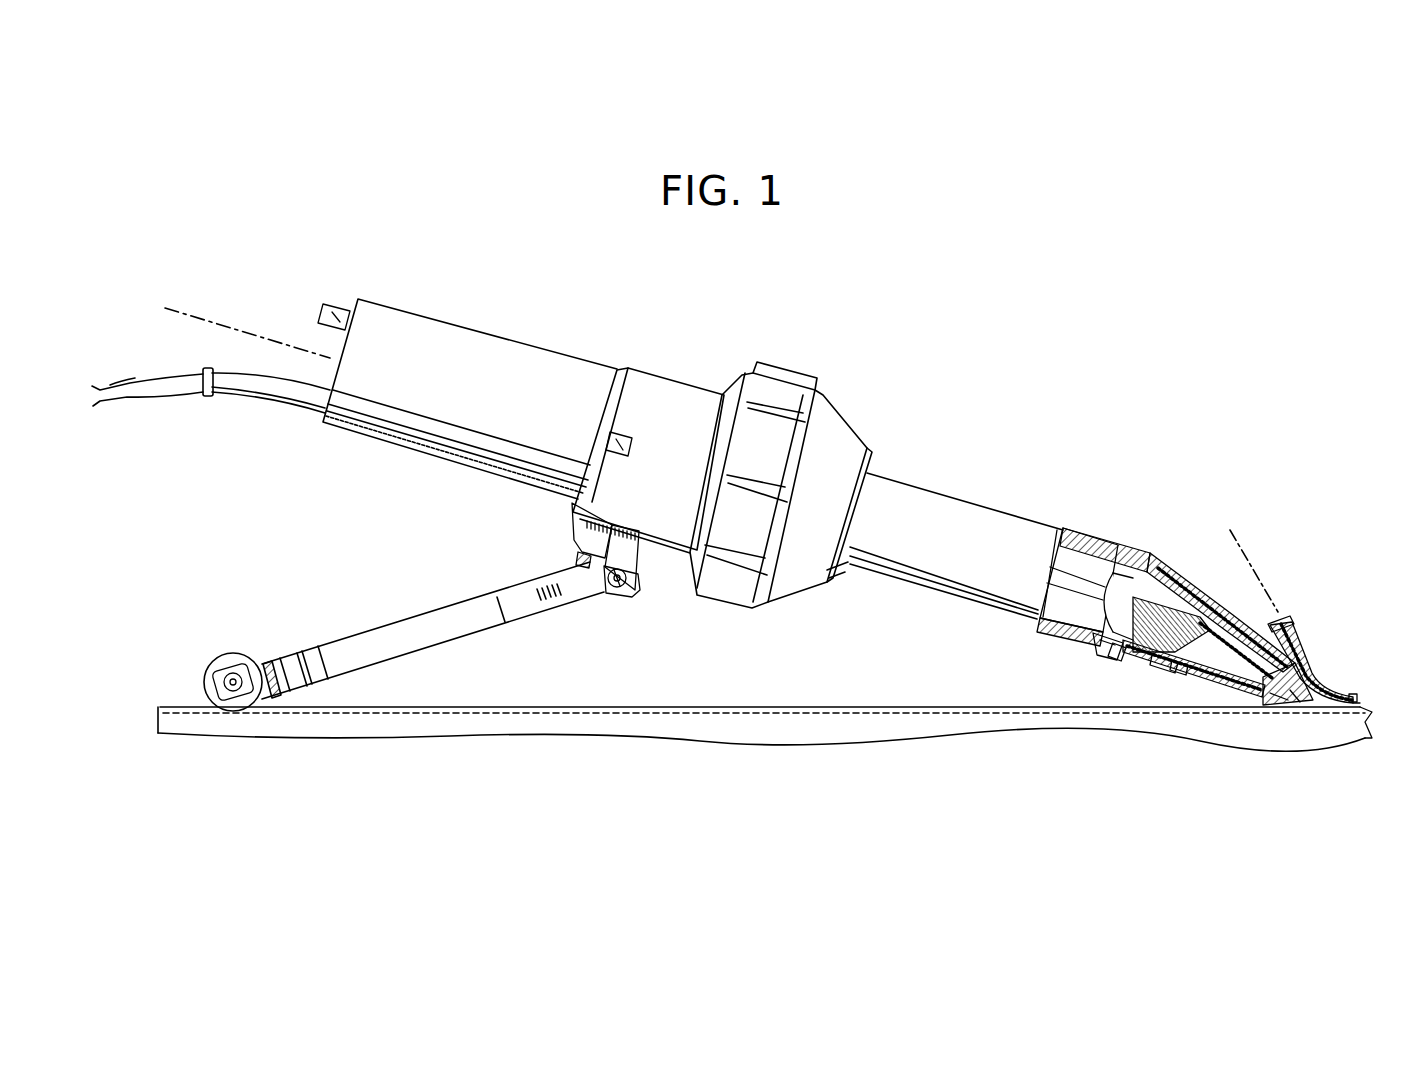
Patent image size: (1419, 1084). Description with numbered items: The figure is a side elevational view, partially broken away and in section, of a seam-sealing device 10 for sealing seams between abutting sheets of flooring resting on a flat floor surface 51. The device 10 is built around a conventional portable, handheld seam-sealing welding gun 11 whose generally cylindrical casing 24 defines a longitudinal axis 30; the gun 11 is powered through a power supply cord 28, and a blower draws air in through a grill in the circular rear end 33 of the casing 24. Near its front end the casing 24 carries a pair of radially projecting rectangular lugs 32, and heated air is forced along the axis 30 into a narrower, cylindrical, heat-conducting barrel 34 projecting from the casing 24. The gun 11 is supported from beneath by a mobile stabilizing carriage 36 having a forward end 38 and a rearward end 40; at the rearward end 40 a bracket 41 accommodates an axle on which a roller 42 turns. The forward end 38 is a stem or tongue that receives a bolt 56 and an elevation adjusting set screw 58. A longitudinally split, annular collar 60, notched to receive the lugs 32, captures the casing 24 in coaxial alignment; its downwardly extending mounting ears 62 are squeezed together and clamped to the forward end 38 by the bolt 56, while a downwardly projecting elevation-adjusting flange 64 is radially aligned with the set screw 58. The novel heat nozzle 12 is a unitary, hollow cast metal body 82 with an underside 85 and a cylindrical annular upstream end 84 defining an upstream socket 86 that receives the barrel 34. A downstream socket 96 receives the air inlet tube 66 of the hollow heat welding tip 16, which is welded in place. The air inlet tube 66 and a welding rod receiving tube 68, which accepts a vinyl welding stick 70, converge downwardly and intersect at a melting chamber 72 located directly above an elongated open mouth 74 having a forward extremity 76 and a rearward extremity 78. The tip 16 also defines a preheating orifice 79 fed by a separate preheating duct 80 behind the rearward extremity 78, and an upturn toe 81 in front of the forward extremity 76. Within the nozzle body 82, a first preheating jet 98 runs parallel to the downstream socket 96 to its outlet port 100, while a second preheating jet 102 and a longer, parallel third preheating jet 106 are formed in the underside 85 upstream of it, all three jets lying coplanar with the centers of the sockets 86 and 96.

The seam-sealing device 10 is at (950, 340).
The seam-sealing welding gun 11 is at (789, 356).
The heat nozzle 12 is at (1120, 535).
The heat welding tip 16 is at (1313, 598).
The casing 24 is at (508, 344).
The power supply cord 28 is at (264, 388).
The longitudinal axis 30 is at (192, 313).
The lugs 32 is at (622, 433).
The circular rear end 33 is at (340, 343).
The heat-conducting barrel 34 is at (968, 515).
The stabilizing carriage 36 is at (400, 600).
The forward end 38 is at (634, 594).
The rearward end 40 is at (263, 663).
The bracket 41 is at (245, 672).
The roller 42 is at (218, 660).
The floor surface 51 is at (835, 705).
The bolt 56 is at (619, 590).
The elevation adjusting set screw 58 is at (575, 566).
The collar 60 is at (670, 398).
The mounting ears 62 is at (640, 547).
The elevation-adjusting flange 64 is at (578, 531).
The air inlet tube 66 is at (1240, 667).
The welding rod receiving tube 68 is at (1300, 640).
The welding stick 70 is at (1262, 570).
The melting chamber 72 is at (1303, 688).
The open mouth 74 is at (1327, 708).
The forward extremity 76 is at (1358, 702).
The rearward extremity 78 is at (1296, 702).
The preheating orifice 79 is at (1281, 702).
The preheating duct 80 is at (1267, 697).
The upturn toe 81 is at (1353, 694).
The metal body 82 is at (1087, 528).
The upstream end 84 is at (1142, 543).
The underside 85 is at (1045, 625).
The upstream socket 86 is at (1052, 555).
The downstream socket 96 is at (1186, 584).
The first preheating jet 98 is at (1160, 660).
The outlet port 100 is at (1186, 668).
The second preheating jet 102 is at (1120, 657).
The third preheating jet 106 is at (1100, 655).